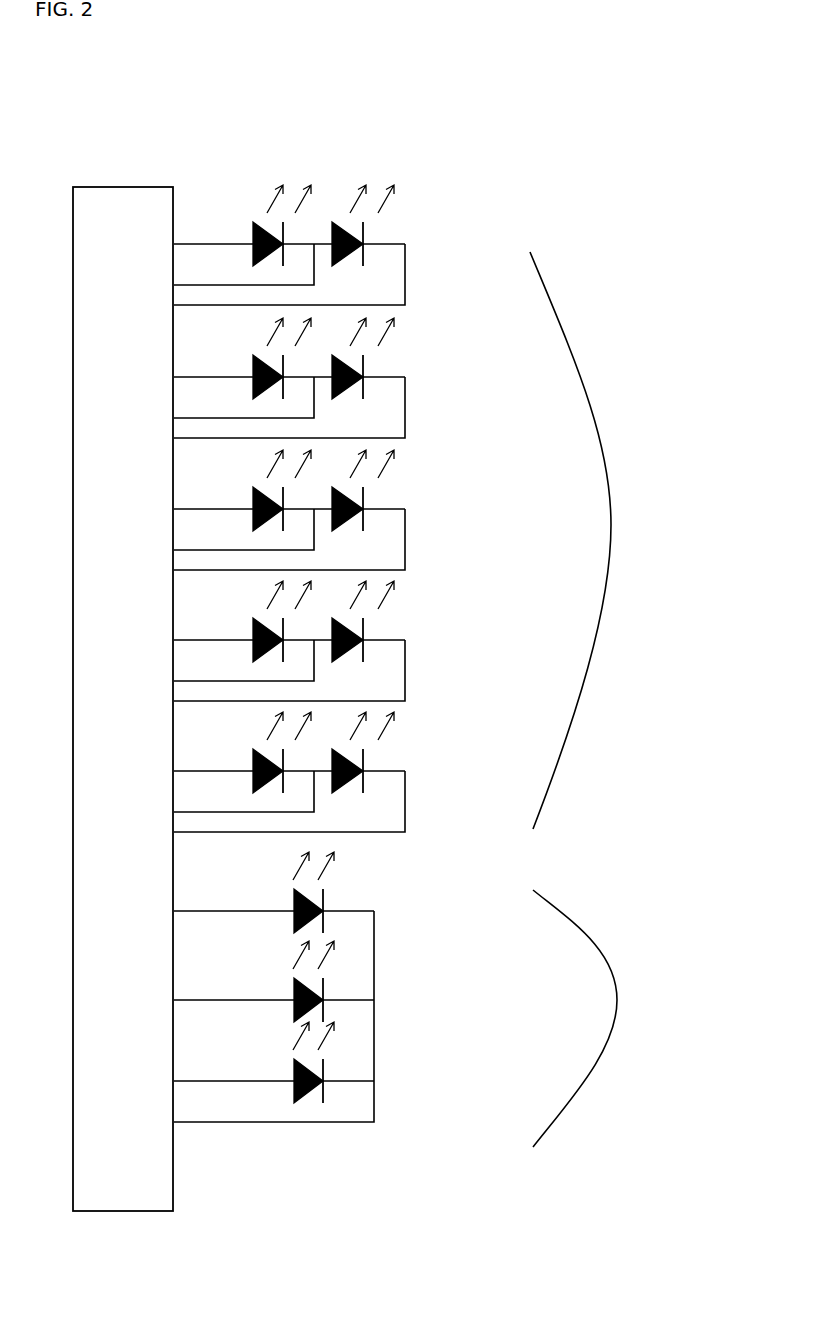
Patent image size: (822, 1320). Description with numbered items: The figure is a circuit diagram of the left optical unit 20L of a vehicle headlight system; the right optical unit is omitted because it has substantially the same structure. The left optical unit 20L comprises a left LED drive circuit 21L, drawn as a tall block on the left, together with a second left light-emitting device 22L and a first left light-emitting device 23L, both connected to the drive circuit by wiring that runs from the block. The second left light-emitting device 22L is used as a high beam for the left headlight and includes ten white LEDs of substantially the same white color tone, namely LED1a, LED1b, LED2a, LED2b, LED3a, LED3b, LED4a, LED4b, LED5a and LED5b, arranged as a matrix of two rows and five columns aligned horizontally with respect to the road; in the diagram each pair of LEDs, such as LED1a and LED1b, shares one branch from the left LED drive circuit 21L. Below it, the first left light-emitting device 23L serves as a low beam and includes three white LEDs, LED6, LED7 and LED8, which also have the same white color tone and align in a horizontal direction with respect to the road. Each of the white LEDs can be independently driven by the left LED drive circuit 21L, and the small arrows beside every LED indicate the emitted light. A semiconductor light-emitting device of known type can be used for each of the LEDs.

The left optical unit 20L is at (288, 137).
The left LED drive circuit 21L is at (120, 187).
The second left light-emitting device 22L is at (611, 525).
The first left light-emitting device 23L is at (617, 1000).
The white LED LED1a is at (253, 225).
The white LED LED1b is at (391, 225).
The white LED LED2a is at (253, 358).
The white LED LED2b is at (391, 358).
The white LED LED3a is at (253, 490).
The white LED LED3b is at (391, 490).
The white LED LED4a is at (253, 621).
The white LED LED4b is at (391, 621).
The white LED LED5a is at (253, 752).
The white LED LED5b is at (391, 752).
The white LED LED6 is at (300, 892).
The white LED LED7 is at (300, 981).
The white LED LED8 is at (302, 1062).